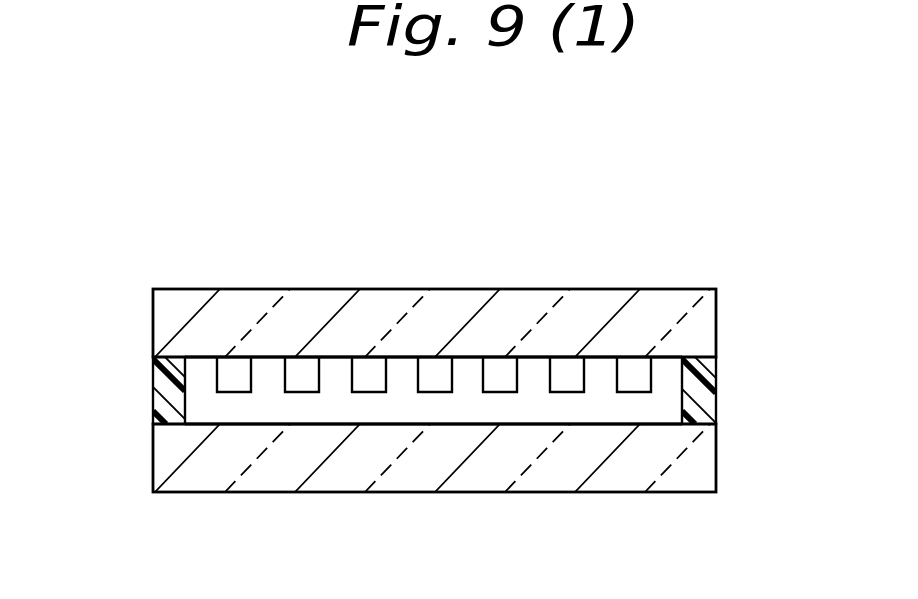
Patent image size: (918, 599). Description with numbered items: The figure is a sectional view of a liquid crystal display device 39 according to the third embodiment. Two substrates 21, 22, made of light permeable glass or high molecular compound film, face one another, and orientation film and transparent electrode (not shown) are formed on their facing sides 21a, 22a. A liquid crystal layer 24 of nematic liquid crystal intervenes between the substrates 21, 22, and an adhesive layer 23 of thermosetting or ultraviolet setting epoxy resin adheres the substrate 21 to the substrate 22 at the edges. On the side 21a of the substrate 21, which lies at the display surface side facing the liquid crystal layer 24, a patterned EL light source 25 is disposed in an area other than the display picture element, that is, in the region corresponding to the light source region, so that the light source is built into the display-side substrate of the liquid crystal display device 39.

The liquid crystal display device 39 is at (450, 178).
The substrate 21 is at (377, 317).
The one side of substrate 21a is at (605, 371).
The substrate 22 is at (542, 476).
The one side of substrate 22a is at (302, 420).
The adhesive layer 23 is at (166, 388).
The liquid crystal layer 24 is at (473, 373).
The EL light source 25 is at (305, 366).